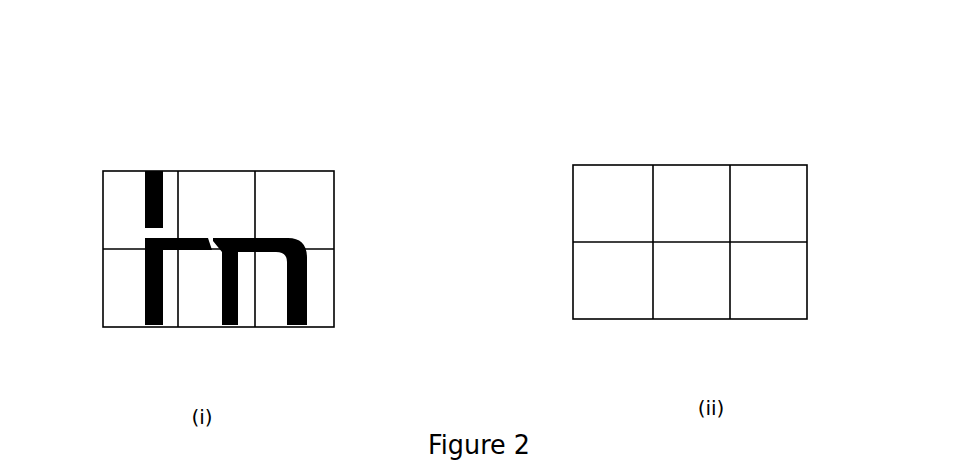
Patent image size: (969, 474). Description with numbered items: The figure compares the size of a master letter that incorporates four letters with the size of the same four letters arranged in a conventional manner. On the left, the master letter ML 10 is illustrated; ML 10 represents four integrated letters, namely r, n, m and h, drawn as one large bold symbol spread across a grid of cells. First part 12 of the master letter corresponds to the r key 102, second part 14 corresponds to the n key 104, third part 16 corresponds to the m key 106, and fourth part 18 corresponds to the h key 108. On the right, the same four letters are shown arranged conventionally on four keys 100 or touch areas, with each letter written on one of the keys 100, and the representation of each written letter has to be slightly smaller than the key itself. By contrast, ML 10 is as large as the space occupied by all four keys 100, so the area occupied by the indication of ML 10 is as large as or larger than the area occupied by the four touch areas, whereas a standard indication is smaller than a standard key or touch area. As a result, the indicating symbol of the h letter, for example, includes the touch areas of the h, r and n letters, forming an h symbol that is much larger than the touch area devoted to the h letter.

The master letter 10 is at (205, 88).
The keys 100 is at (308, 202).
The fourth part 18 is at (145, 203).
The first part 12 is at (145, 303).
The second part 14 is at (228, 327).
The third part 16 is at (307, 282).
The h key 108 is at (600, 202).
The r key 102 is at (600, 287).
The n key 104 is at (697, 292).
The m key 106 is at (787, 283).